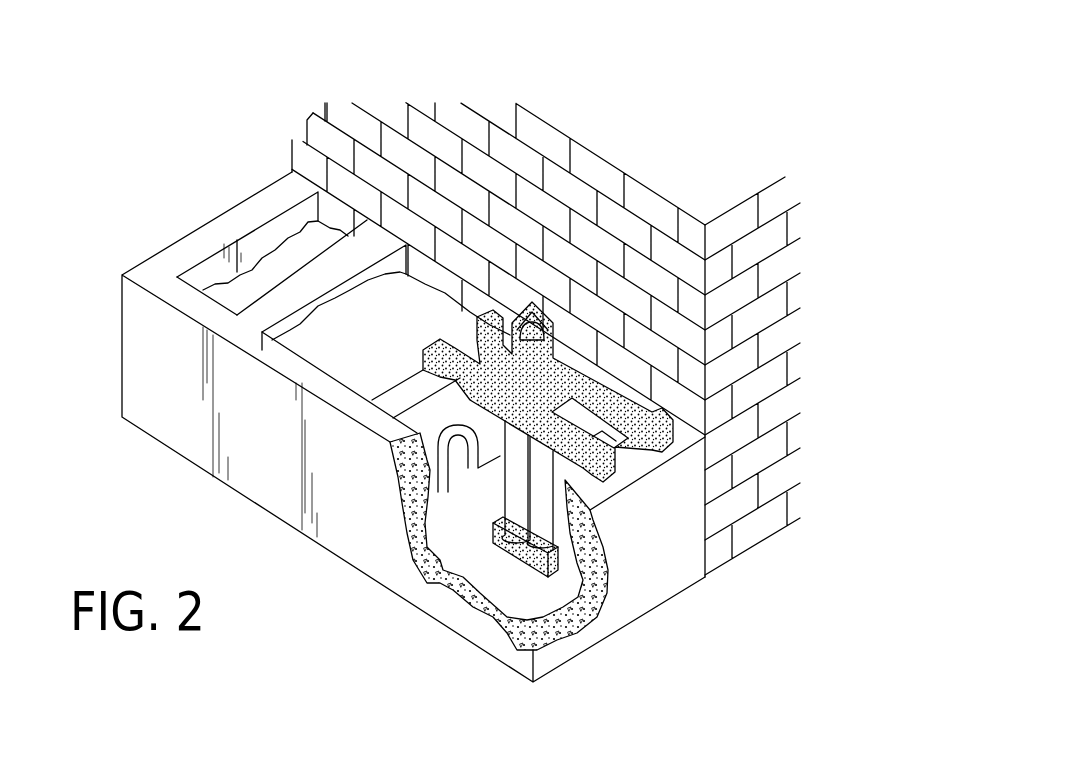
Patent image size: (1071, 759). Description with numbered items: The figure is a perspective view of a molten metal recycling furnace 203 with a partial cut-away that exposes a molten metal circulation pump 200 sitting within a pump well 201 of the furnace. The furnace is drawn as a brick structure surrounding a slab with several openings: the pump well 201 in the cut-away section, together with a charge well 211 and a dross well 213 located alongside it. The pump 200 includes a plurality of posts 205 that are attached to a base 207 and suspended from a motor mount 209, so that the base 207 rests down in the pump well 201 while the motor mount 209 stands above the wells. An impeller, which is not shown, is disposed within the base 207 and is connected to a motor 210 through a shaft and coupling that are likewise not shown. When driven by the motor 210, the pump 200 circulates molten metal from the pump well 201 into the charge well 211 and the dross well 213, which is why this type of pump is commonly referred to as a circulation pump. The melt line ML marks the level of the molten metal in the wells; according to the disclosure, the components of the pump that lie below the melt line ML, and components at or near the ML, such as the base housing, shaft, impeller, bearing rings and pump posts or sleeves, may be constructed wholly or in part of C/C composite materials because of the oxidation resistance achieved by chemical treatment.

The molten metal circulation pump 200 is at (497, 467).
The pump well 201 is at (470, 545).
The recycling furnace 203 is at (783, 557).
The posts 205 is at (590, 512).
The base 207 is at (523, 570).
The motor mount 209 is at (545, 500).
The motor 210 is at (556, 330).
The charge well 211 is at (350, 335).
The dross well 213 is at (242, 287).
The melt line ML is at (448, 420).